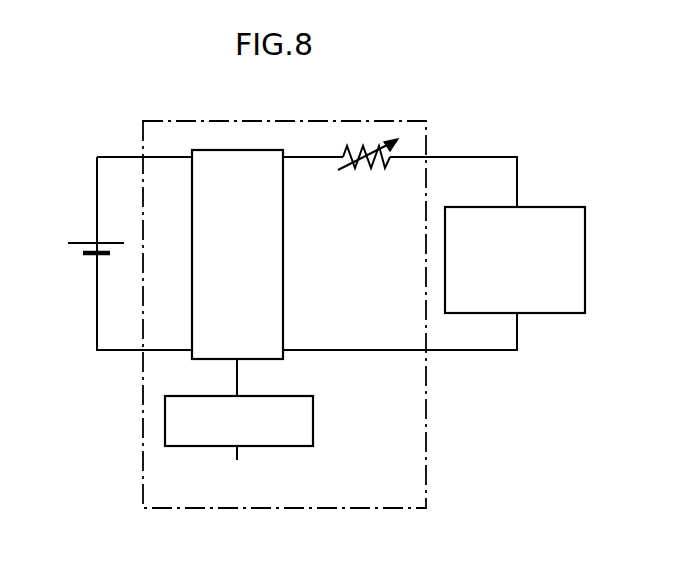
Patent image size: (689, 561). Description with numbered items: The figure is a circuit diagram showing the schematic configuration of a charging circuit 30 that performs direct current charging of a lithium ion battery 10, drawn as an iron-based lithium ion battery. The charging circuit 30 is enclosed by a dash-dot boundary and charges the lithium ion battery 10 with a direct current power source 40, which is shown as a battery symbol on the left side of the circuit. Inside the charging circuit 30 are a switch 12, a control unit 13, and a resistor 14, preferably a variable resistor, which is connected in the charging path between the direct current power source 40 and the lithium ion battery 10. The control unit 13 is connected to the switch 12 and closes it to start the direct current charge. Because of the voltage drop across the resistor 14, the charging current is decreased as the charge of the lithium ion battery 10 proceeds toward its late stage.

The lithium ion battery 10 is at (587, 227).
The switch 12 is at (253, 150).
The control unit 13 is at (314, 424).
The resistor 14 is at (358, 153).
The charging circuit 30 is at (143, 452).
The direct current power source 40 is at (85, 243).